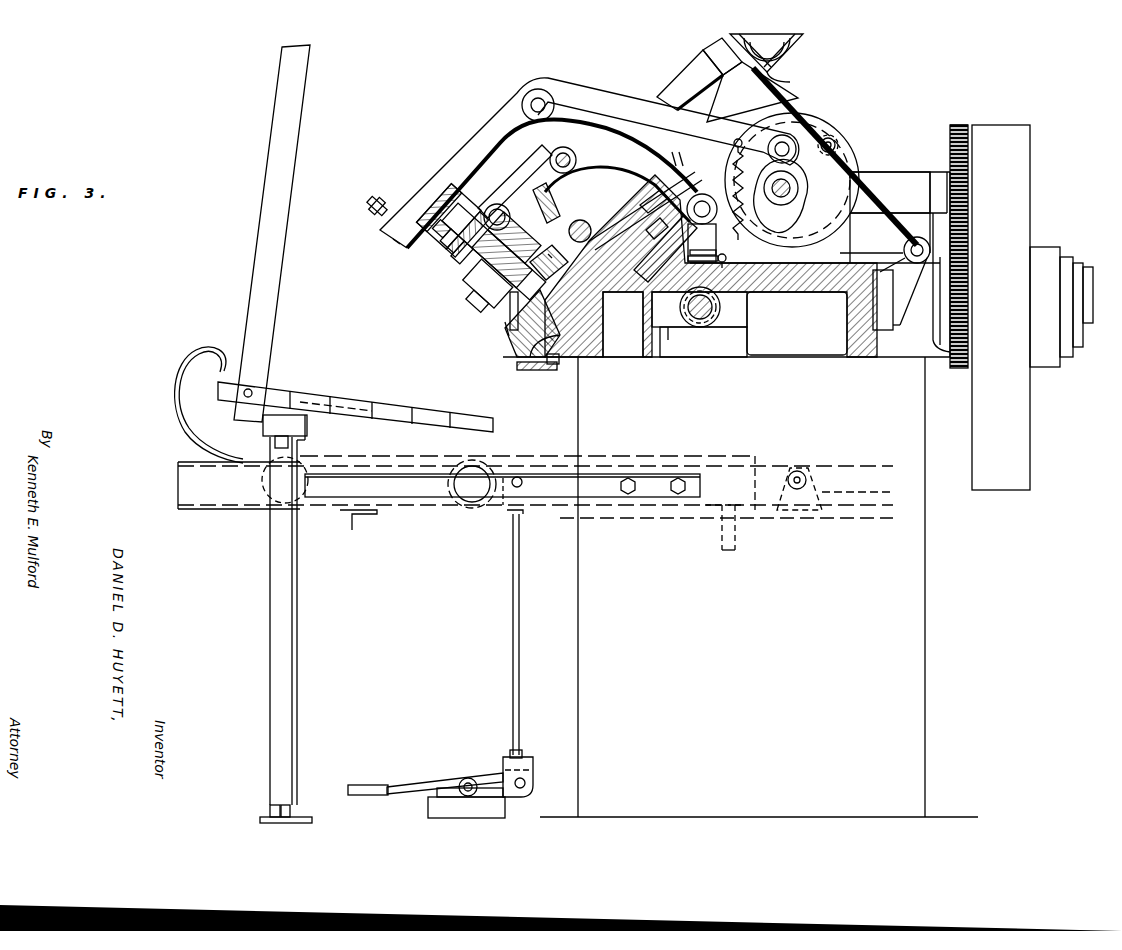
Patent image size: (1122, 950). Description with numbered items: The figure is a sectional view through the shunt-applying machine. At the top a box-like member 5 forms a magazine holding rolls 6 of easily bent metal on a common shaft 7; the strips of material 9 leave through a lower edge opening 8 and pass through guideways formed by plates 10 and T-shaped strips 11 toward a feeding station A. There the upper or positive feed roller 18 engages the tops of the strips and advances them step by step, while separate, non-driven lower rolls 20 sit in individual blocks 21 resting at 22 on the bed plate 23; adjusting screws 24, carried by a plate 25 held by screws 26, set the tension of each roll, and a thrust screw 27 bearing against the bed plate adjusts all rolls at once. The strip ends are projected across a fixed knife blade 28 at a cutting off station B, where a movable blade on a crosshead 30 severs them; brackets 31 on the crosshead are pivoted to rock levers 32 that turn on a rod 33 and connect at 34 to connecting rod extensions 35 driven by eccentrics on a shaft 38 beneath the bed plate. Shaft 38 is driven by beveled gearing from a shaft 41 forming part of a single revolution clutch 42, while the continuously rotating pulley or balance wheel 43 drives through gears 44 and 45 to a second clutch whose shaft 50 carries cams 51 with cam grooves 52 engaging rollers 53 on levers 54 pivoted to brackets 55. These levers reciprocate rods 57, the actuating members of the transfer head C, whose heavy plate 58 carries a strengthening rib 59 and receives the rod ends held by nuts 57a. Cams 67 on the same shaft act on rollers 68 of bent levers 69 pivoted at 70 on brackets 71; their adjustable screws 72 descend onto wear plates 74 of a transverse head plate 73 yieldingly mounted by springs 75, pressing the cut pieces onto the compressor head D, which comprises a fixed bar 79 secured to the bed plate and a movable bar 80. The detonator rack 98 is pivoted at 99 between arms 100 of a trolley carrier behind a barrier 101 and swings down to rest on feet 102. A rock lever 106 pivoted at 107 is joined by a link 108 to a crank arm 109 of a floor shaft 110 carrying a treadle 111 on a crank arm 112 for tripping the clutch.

The box-like member 5 is at (806, 52).
The rolls 6 is at (800, 62).
The common shaft 7 is at (730, 35).
The lower edge opening 8 is at (793, 82).
The strips of material 9 is at (730, 106).
The plates 10 is at (641, 208).
The strips 11 is at (677, 159).
The upper feed roller 18 is at (553, 201).
The lower rolls 20 is at (604, 248).
The blocks 21 is at (648, 206).
The resting point 22 is at (603, 296).
The bed plate 23 is at (795, 280).
The adjusting screws 24 is at (676, 212).
The plate 25 is at (690, 252).
The screws 26 is at (723, 251).
The thrust screw 27 is at (665, 326).
The fixed knife blade 28 is at (548, 252).
The crosshead 30 is at (449, 251).
The brackets 31 is at (497, 204).
The rock levers 32 is at (516, 176).
The rod 33 is at (562, 150).
The pivotal connection 34 is at (702, 195).
The connecting rod extensions 35 is at (662, 227).
The shaft 38 is at (712, 318).
The shaft 41 is at (1090, 284).
The single revolution clutch 42 is at (1068, 365).
The pulley or balance wheel 43 is at (1030, 453).
The gear 44 is at (957, 375).
The gear 45 is at (968, 215).
The shaft 50 is at (789, 192).
The cams 51 is at (860, 166).
The cam grooves 52 is at (846, 142).
The rollers 53 is at (836, 138).
The levers 54 is at (884, 186).
The brackets 55 is at (901, 283).
The rods 57 is at (684, 80).
The nuts 57a is at (465, 289).
The plate 58 is at (443, 241).
The strengthening rib 59 is at (461, 304).
The cams 67 is at (793, 222).
The rollers 68 is at (788, 148).
The bent levers 69 is at (626, 106).
The pivot 70 is at (548, 95).
The brackets 71 is at (528, 134).
The adjustable screws 72 is at (374, 200).
The transverse head plate 73 is at (459, 209).
The wear plates 74 is at (441, 209).
The springs 75 is at (433, 230).
The fixed bar 79 is at (540, 312).
The movable bar 80 is at (526, 372).
The rack 98 is at (305, 392).
The pivot 99 is at (255, 389).
The arms 100 is at (264, 318).
The barrier 101 is at (181, 422).
The feet 102 is at (552, 372).
The rock lever 106 is at (870, 490).
The pivot 107 is at (802, 476).
The link 108 is at (520, 668).
The crank arm 109 is at (524, 792).
The shaft 110 is at (472, 778).
The treadle 111 is at (366, 789).
The crank arm 112 is at (418, 788).
The feeding station A is at (612, 196).
The cutting off station B is at (544, 259).
The transfer head C is at (487, 259).
The compressor head D is at (504, 330).